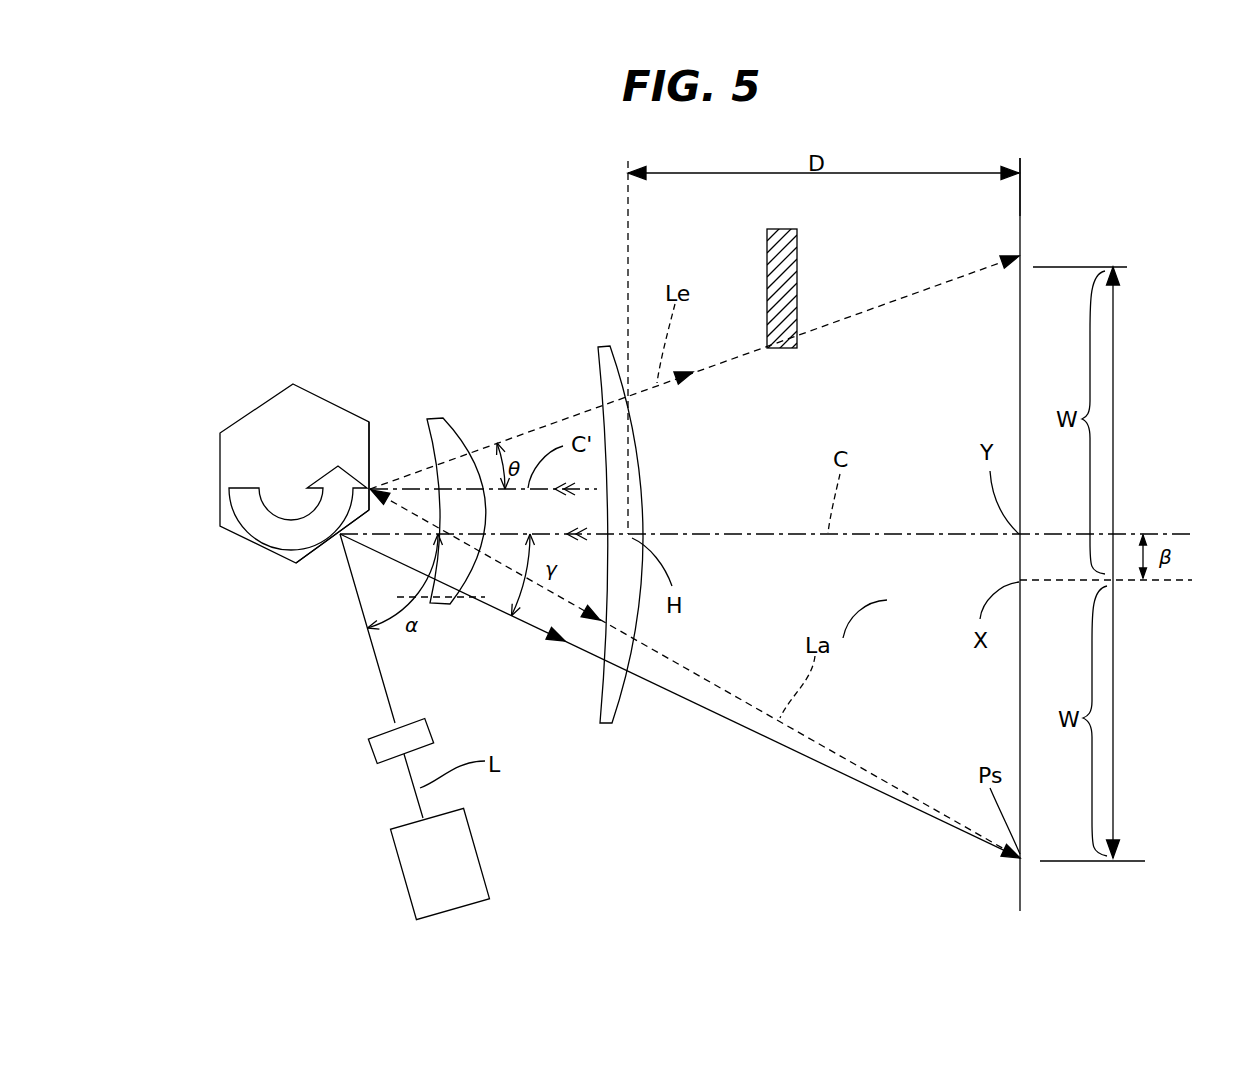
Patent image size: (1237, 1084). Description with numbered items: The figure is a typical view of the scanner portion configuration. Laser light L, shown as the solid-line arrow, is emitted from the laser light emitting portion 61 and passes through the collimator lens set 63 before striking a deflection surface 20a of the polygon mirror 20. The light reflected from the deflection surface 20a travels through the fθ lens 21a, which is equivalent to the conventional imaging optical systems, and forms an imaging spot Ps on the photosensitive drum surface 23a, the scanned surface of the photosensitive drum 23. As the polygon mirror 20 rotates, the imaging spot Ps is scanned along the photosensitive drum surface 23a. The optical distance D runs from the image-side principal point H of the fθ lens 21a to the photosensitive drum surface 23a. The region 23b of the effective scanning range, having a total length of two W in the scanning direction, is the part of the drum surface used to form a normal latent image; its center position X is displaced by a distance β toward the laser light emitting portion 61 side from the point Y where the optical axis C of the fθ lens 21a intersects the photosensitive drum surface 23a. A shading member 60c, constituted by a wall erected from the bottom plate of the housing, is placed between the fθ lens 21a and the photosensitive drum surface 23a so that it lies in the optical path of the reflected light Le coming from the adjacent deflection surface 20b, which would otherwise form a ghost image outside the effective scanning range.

The polygon mirror 20 is at (235, 452).
The deflection surface 20a is at (320, 553).
The adjacent deflection surface 20b is at (370, 440).
The fθ lens 21a is at (603, 343).
The photosensitive drum 23 is at (1058, 896).
The photosensitive drum surface 23a is at (1019, 210).
The effective scanning range region 23b is at (1113, 347).
The shading member 60c is at (797, 257).
The laser light emitting portion 61 is at (480, 858).
The collimator lens set 63 is at (433, 725).